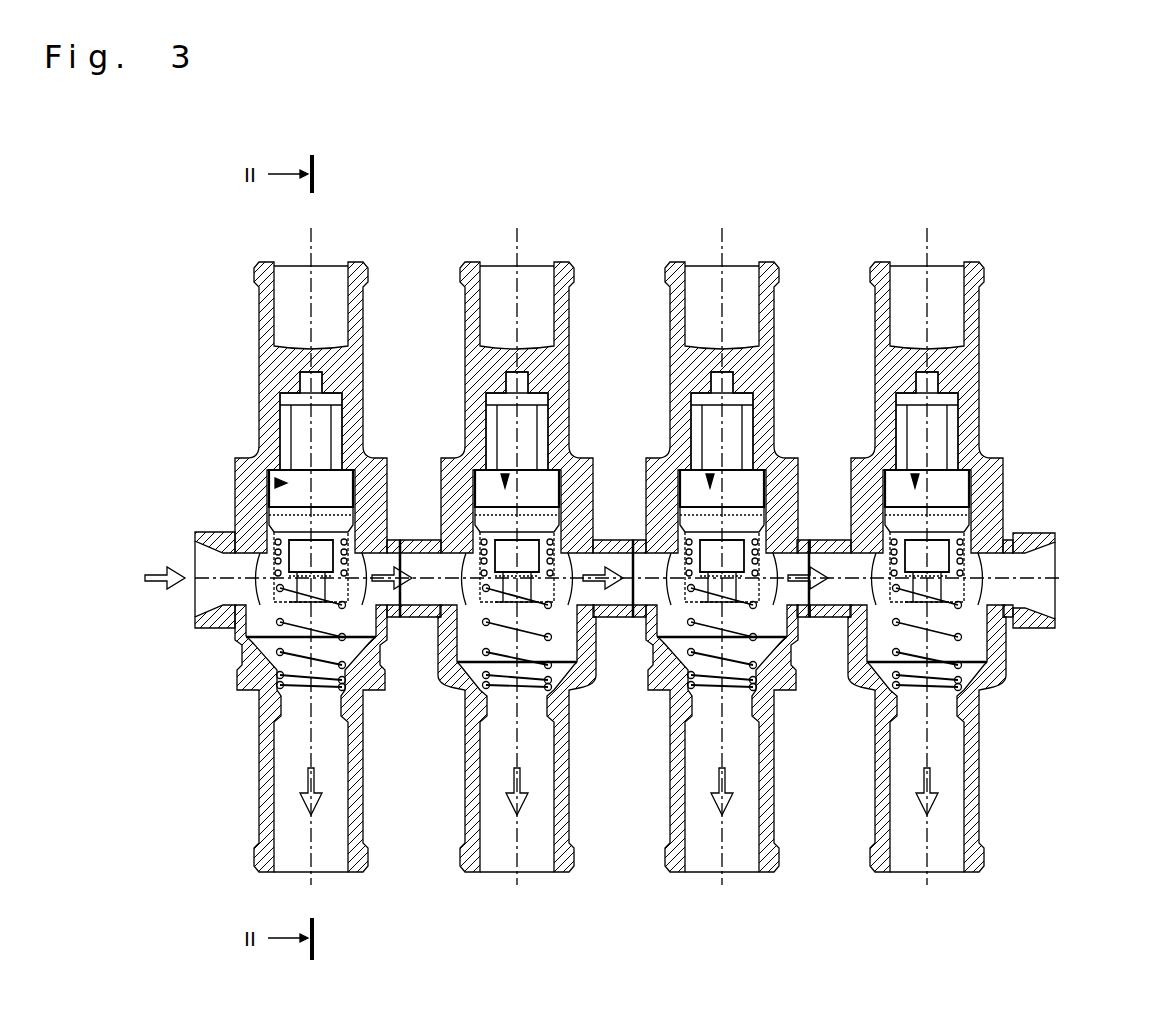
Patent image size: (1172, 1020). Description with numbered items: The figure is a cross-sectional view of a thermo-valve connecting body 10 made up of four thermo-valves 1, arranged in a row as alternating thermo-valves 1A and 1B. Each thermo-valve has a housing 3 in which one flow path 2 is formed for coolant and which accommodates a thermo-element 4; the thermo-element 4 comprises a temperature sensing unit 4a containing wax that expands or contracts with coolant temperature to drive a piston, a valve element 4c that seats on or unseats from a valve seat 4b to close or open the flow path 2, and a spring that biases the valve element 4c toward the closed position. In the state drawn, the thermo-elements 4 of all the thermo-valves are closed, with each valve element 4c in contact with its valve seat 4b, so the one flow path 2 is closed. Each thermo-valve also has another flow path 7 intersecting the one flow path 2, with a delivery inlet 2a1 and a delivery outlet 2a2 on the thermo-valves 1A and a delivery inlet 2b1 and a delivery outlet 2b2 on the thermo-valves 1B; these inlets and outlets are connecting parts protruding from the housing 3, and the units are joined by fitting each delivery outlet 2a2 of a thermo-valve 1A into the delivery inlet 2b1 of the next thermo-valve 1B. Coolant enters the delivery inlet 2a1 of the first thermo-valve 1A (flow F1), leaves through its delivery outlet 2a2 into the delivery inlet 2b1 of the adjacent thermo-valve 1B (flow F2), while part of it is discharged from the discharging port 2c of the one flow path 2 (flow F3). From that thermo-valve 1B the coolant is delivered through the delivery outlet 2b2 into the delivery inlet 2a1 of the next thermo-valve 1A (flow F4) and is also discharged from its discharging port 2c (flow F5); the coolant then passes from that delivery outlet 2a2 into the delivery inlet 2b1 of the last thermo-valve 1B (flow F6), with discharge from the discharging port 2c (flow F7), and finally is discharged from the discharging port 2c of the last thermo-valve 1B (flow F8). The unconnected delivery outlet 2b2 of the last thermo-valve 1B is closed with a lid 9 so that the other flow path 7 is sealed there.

The valve unit assembly 10 is at (603, 564).
The valve unit 1 is at (671, 365).
The thermo-valve 1A is at (363, 265).
The thermo-valve 1B is at (570, 265).
The one flow path 2 is at (330, 278).
The delivery inlet 2a1 is at (200, 608).
The delivery outlet 2a2 is at (383, 652).
The delivery inlet 2b1 is at (430, 630).
The delivery outlet 2b2 is at (580, 650).
The discharging port 2c is at (330, 868).
The housing 3 is at (240, 455).
The thermo-element 4 is at (265, 480).
The temperature sensing unit 4a is at (300, 547).
The valve seat 4b is at (262, 470).
The valve element 4c is at (392, 468).
The another flow path 7 is at (242, 598).
The lid 9 is at (1058, 590).
The coolant flow F1 is at (145, 580).
The coolant flow F2 is at (398, 622).
The coolant flow F3 is at (300, 782).
The coolant flow F4 is at (603, 548).
The coolant flow F5 is at (490, 812).
The coolant flow F6 is at (808, 548).
The coolant flow F7 is at (700, 785).
The coolant flow F8 is at (960, 778).